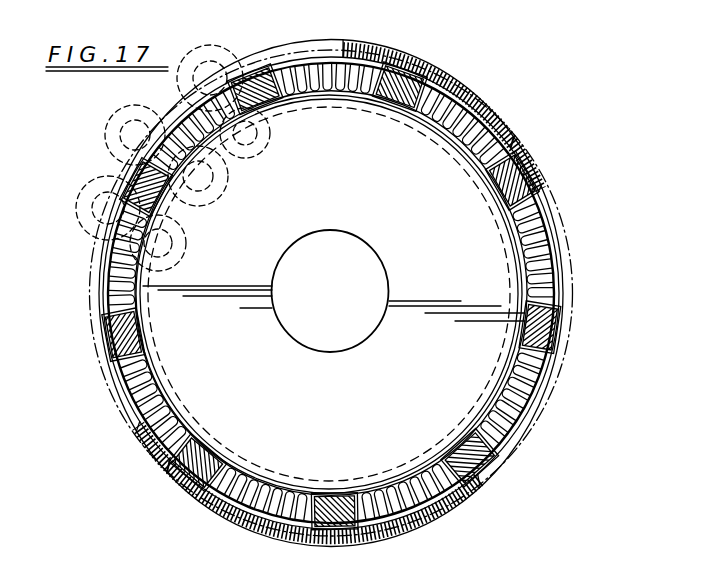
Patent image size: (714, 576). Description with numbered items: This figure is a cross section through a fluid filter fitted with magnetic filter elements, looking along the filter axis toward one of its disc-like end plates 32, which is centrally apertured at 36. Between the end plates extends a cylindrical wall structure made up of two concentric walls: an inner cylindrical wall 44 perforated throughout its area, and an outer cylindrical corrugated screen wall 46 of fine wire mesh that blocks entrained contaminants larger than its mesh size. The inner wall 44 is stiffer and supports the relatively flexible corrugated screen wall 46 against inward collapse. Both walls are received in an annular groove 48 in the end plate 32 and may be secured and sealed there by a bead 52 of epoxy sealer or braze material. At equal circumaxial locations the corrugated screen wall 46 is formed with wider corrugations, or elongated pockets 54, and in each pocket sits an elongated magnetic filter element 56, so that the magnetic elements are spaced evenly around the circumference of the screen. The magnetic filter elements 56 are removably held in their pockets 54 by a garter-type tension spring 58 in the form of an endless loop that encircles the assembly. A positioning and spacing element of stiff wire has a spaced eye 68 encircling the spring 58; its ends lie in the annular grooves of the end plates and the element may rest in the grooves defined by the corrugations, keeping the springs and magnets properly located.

The end plate 32 is at (340, 385).
The central aperture 36 is at (344, 334).
The inner cylindrical wall with perforations 44 is at (492, 398).
The outer cylindrical corrugated screen wall 46 is at (542, 229).
The annular groove 48 is at (520, 382).
The bead 52 is at (527, 366).
The elongated pockets 54 is at (408, 95).
The magnetic filter elements 56 is at (254, 52).
The tension spring 58 is at (548, 167).
The eye 68 is at (526, 129).